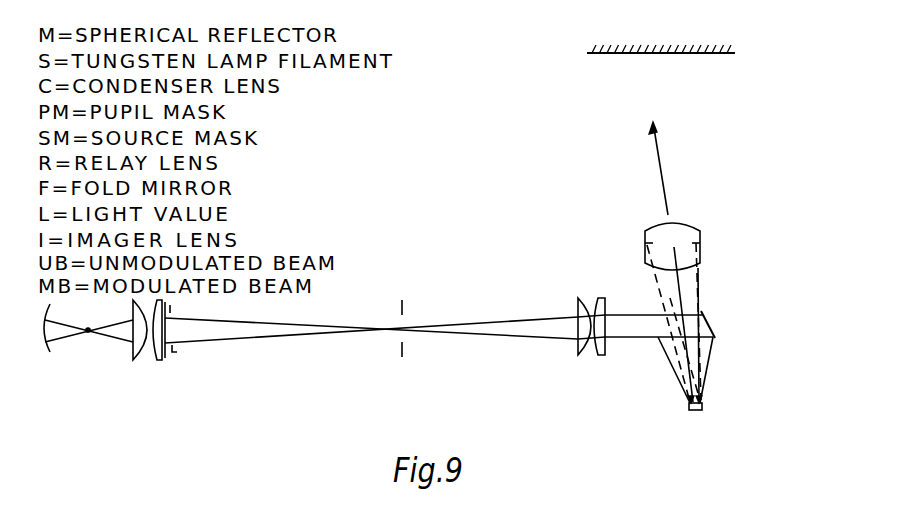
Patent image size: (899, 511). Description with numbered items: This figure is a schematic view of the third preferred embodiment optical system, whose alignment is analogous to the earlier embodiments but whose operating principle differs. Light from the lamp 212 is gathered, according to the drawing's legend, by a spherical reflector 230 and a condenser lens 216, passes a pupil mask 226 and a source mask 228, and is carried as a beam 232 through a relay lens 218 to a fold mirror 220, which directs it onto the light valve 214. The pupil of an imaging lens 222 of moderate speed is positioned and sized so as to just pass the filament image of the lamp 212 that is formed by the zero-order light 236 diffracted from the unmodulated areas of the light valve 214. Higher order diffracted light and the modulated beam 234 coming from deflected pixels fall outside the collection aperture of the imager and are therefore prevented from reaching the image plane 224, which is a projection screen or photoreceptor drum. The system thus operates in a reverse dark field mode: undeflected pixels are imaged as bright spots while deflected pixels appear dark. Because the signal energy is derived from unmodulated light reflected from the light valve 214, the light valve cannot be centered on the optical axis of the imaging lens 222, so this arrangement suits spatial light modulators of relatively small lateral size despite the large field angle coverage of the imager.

The lamp 212 is at (89, 334).
The light valve 214 is at (703, 409).
The condenser lens 216 is at (151, 360).
The relay lens 218 is at (578, 360).
The fold mirror 220 is at (723, 331).
The imaging lens 222 is at (708, 203).
The image plane 224 is at (675, 56).
The pupil mask 226 is at (176, 352).
The source mask 228 is at (405, 348).
The spherical reflector 230 is at (50, 352).
The light beam 232 is at (280, 337).
The modulated beam 234 is at (670, 302).
The zero-order light 236 is at (681, 287).